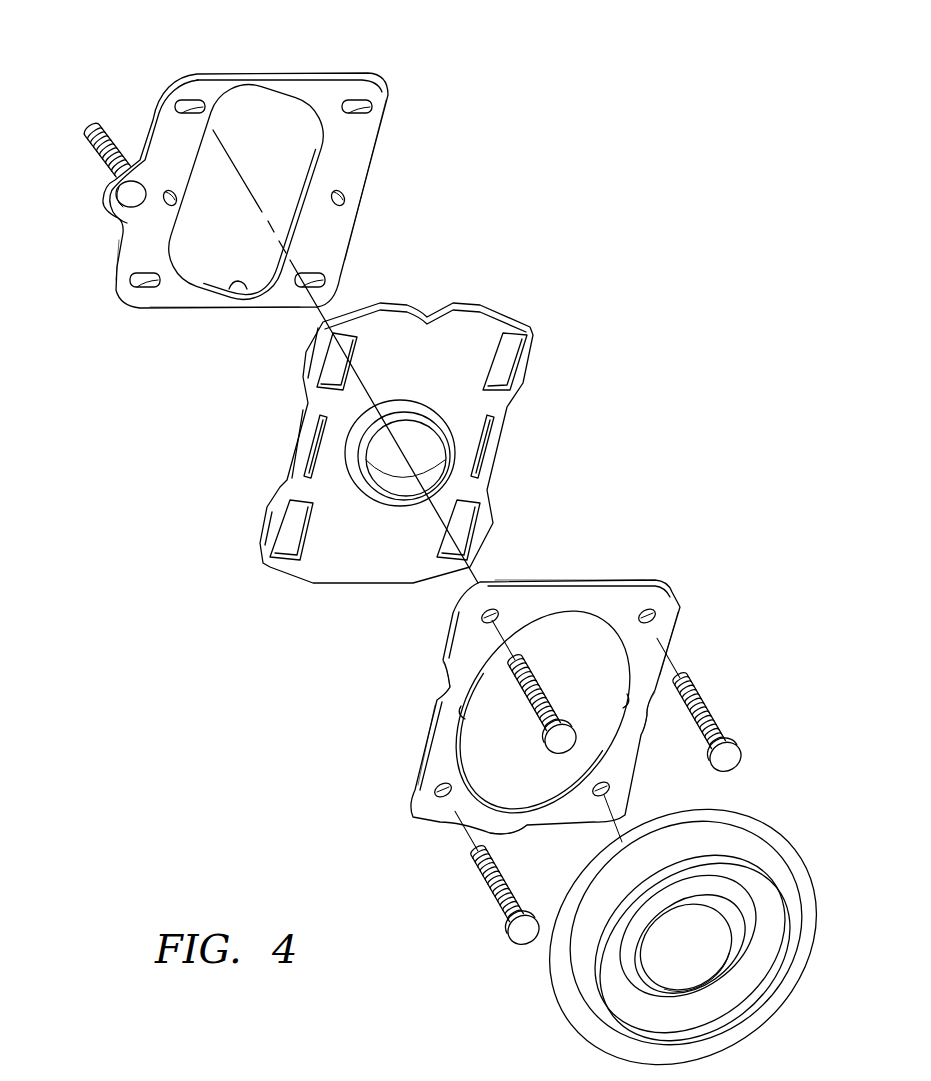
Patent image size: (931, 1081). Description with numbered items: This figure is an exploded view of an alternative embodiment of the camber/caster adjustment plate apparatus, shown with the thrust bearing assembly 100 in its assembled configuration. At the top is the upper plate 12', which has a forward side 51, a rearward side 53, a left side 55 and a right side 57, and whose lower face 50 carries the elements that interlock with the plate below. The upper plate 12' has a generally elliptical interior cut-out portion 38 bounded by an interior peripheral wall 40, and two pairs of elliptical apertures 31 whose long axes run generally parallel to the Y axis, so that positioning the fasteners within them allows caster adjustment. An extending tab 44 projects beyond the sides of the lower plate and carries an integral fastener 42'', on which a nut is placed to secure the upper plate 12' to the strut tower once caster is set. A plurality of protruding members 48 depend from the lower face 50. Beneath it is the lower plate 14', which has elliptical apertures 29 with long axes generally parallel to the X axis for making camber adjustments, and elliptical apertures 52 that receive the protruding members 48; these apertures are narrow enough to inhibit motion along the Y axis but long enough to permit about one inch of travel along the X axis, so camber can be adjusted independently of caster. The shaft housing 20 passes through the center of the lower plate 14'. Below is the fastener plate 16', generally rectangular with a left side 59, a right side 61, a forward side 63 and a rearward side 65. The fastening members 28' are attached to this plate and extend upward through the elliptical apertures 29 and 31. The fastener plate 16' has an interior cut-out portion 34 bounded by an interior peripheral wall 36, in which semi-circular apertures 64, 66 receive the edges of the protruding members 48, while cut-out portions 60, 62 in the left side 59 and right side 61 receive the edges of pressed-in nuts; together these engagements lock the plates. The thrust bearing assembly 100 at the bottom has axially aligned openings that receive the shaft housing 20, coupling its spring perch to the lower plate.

The upper plate 12' is at (312, 328).
The rearward side 53 is at (305, 73).
The right side 57 is at (372, 163).
The left side 55 is at (120, 255).
The forward side 51 is at (165, 308).
The lower face 50 is at (358, 160).
The interior cut-out portion 38 is at (281, 160).
The interior peripheral wall 40 is at (238, 290).
The extending tab 44 is at (115, 200).
The integral fastener 42'' is at (97, 122).
The protruding members 48 is at (168, 206).
The elliptical apertures 31 is at (190, 113).
The lower plate 14' is at (467, 443).
The elliptical apertures 29 is at (323, 362).
The elliptical apertures 52 is at (312, 440).
The shaft housing 20 is at (407, 416).
The fastener plate 16' is at (480, 707).
The rearward side 65 is at (615, 578).
The right side 61 is at (682, 633).
The cut-out portion 60 is at (440, 685).
The cut-out portion 62 is at (648, 722).
The left side 59 is at (416, 768).
The forward side 63 is at (530, 838).
The interior cut-out portion 34 is at (514, 738).
The interior peripheral wall 36 is at (522, 808).
The semi-circular aperture 64 is at (464, 714).
The semi-circular aperture 66 is at (625, 702).
The fastening members 28' is at (598, 778).
The thrust bearing assembly 100 is at (562, 1011).